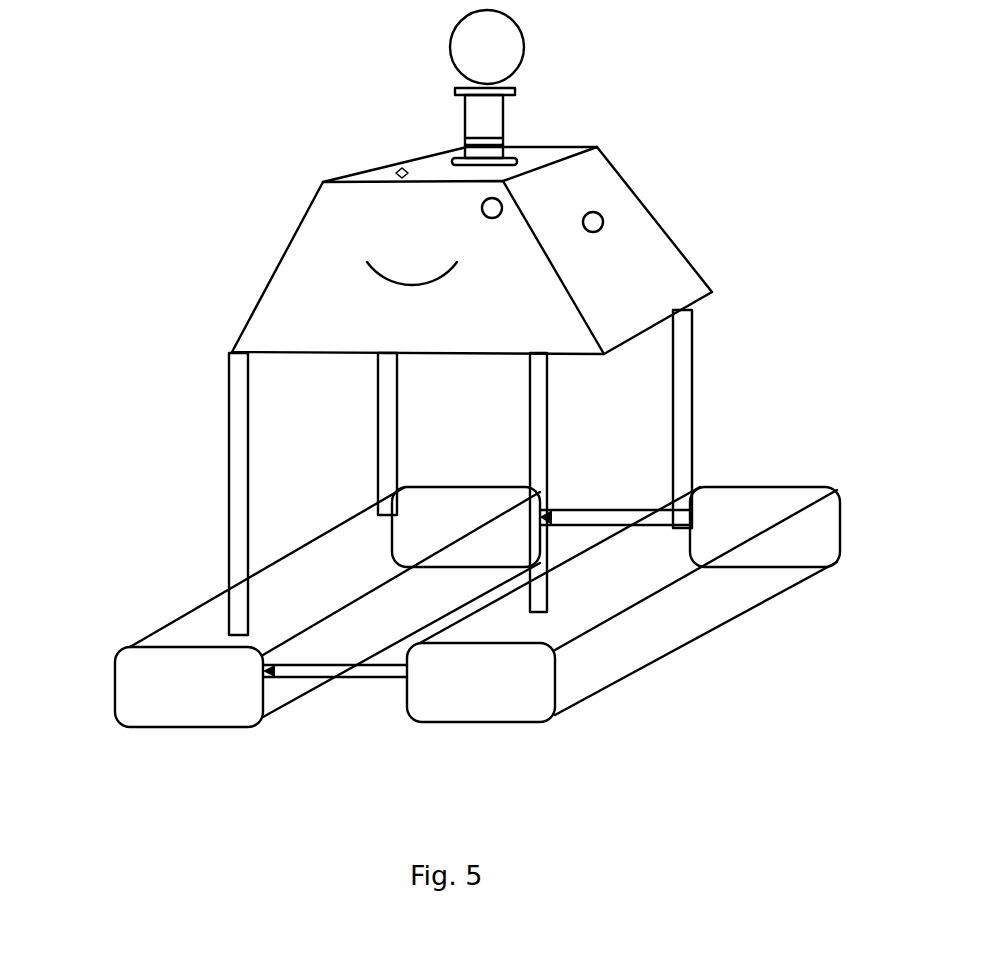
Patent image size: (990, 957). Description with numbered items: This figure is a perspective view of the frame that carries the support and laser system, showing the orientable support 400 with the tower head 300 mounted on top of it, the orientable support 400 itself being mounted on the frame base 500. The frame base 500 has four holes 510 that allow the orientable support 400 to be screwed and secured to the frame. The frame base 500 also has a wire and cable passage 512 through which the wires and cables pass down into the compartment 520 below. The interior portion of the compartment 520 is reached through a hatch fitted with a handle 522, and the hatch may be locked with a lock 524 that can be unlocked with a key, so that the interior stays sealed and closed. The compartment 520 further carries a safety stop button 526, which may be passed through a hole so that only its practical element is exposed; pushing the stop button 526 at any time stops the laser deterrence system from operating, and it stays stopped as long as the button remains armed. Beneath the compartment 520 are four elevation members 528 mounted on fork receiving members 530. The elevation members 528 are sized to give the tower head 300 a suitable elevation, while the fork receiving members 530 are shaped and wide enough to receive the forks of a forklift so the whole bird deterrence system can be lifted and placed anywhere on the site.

The tower head 300 is at (504, 61).
The orientable support 400 is at (485, 123).
The frame base 500 is at (717, 205).
The holes 510 is at (503, 161).
The wire and cable passage 512 is at (402, 172).
The compartment 520 is at (229, 340).
The handle 522 is at (370, 265).
The lock 524 is at (482, 208).
The safety stop button 526 is at (603, 222).
The elevation members 528 is at (543, 557).
The fork receiving members 530 is at (517, 712).